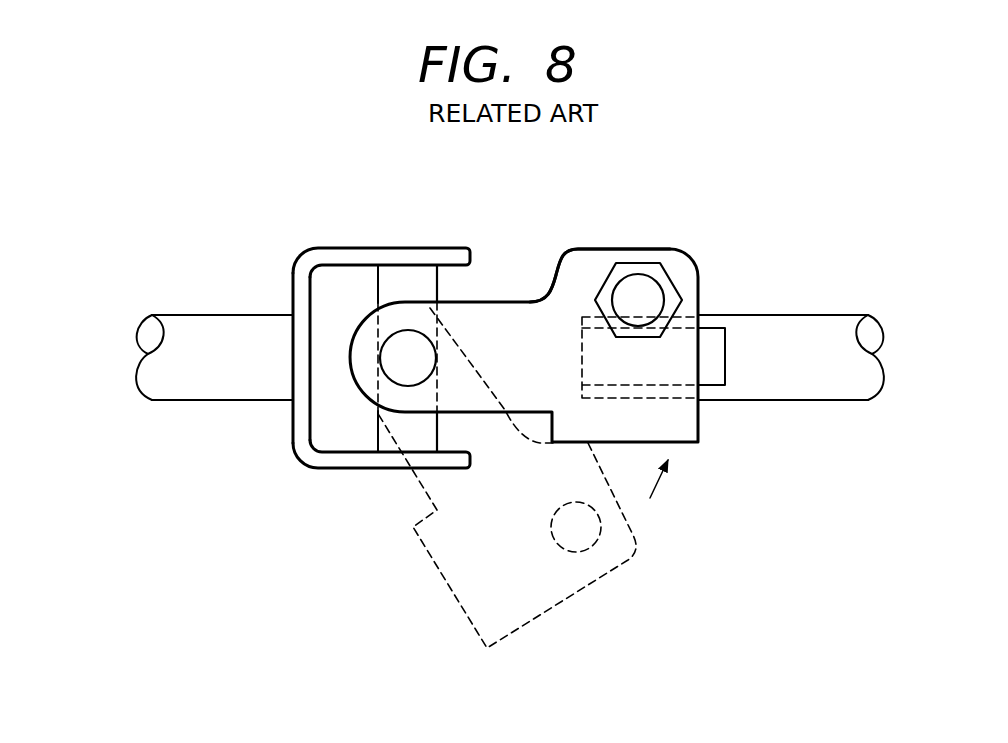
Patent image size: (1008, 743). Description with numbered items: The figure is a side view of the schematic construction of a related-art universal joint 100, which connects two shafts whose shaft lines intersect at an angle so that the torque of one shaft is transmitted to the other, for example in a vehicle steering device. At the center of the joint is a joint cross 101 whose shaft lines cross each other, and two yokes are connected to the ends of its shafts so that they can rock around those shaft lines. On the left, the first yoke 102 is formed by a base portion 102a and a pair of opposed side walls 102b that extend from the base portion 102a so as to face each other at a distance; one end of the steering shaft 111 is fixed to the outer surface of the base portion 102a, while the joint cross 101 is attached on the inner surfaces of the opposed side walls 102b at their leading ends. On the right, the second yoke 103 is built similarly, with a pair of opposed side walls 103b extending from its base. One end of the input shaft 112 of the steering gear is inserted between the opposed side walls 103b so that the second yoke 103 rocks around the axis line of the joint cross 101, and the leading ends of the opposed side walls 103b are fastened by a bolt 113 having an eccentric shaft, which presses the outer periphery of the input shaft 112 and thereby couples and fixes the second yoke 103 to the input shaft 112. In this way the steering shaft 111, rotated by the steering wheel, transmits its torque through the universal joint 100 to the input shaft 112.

The universal joint 100 is at (507, 227).
The joint cross 101 is at (387, 283).
The first yoke 102 is at (284, 254).
The base portion 102a is at (303, 303).
The opposed side walls 102b is at (437, 247).
The second yoke 103 is at (722, 428).
The opposed side walls 103b is at (577, 250).
The steering shaft 111 is at (190, 387).
The input shaft 112 is at (800, 315).
The bolt 113 is at (668, 277).